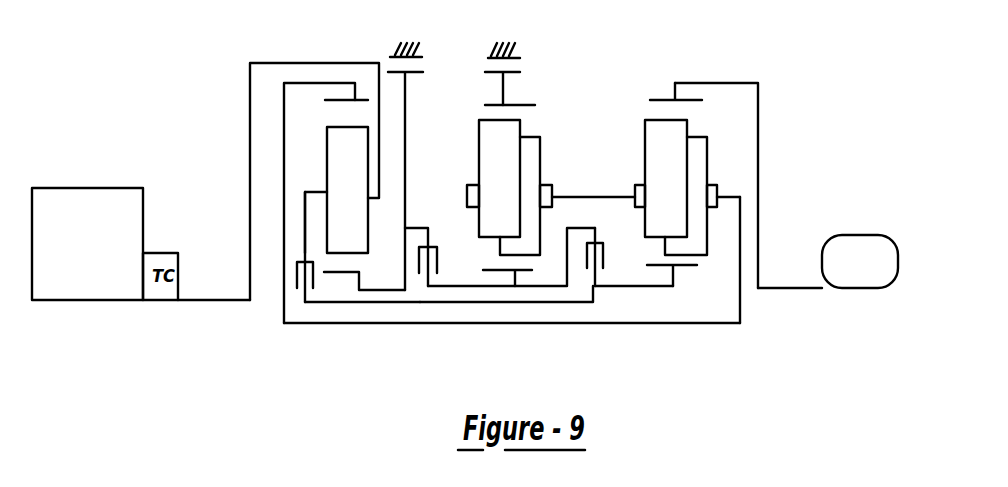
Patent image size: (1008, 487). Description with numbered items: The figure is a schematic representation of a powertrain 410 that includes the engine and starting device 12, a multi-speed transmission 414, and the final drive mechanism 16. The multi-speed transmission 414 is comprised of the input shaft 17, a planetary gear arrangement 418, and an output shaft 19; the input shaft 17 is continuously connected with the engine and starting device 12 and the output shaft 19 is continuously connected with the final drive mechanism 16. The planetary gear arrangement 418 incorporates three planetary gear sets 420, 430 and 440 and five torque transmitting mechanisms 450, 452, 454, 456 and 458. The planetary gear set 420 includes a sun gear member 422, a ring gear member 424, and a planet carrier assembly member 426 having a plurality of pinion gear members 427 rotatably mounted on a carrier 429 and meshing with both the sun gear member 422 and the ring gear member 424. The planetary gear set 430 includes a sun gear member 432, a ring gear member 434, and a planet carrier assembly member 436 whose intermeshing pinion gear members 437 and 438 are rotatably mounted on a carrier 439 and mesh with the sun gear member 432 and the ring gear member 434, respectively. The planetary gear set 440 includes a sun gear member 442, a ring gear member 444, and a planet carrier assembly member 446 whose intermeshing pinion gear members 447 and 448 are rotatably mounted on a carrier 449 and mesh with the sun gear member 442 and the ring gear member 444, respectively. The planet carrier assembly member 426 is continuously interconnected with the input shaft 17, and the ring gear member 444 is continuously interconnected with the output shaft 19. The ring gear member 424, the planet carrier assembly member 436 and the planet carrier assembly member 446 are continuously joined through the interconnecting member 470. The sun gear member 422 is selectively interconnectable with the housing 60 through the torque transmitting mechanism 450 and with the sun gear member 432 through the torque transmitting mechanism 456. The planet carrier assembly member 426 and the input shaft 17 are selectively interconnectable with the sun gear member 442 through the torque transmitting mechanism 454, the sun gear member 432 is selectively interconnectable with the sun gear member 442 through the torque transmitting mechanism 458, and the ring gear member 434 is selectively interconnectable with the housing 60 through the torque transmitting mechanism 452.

The engine and starting device 12 is at (97, 181).
The final drive mechanism 16 is at (848, 226).
The input shaft 17 is at (220, 302).
The output shaft 19 is at (795, 292).
The housing 60 is at (388, 46).
The powertrain 410 is at (170, 77).
The multi-speed transmission 414 is at (640, 63).
The planetary gear arrangement 418 is at (483, 340).
The planetary gear set 420 is at (351, 297).
The sun gear member 422 is at (359, 272).
The ring gear member 424 is at (368, 100).
The planet carrier assembly member 426 is at (300, 131).
The pinion gear members 427 is at (325, 160).
The carrier 429 is at (306, 184).
The planetary gear set 430 is at (471, 294).
The sun gear member 432 is at (523, 272).
The ring gear member 434 is at (527, 105).
The planet carrier assembly member 436 is at (463, 156).
The pinion gear member 437 is at (540, 229).
The pinion gear member 438 is at (521, 127).
The carrier 439 is at (568, 197).
The planetary gear set 440 is at (680, 304).
The sun gear member 442 is at (687, 267).
The ring gear member 444 is at (695, 98).
The planet carrier assembly member 446 is at (733, 134).
The pinion gear member 447 is at (708, 236).
The pinion gear member 448 is at (688, 123).
The carrier 449 is at (722, 195).
The torque transmitting mechanism 450 is at (424, 62).
The torque transmitting mechanism 452 is at (472, 61).
The torque transmitting mechanism 454 is at (292, 298).
The torque transmitting mechanism 456 is at (437, 215).
The torque transmitting mechanism 458 is at (625, 278).
The interconnecting member 470 is at (742, 312).